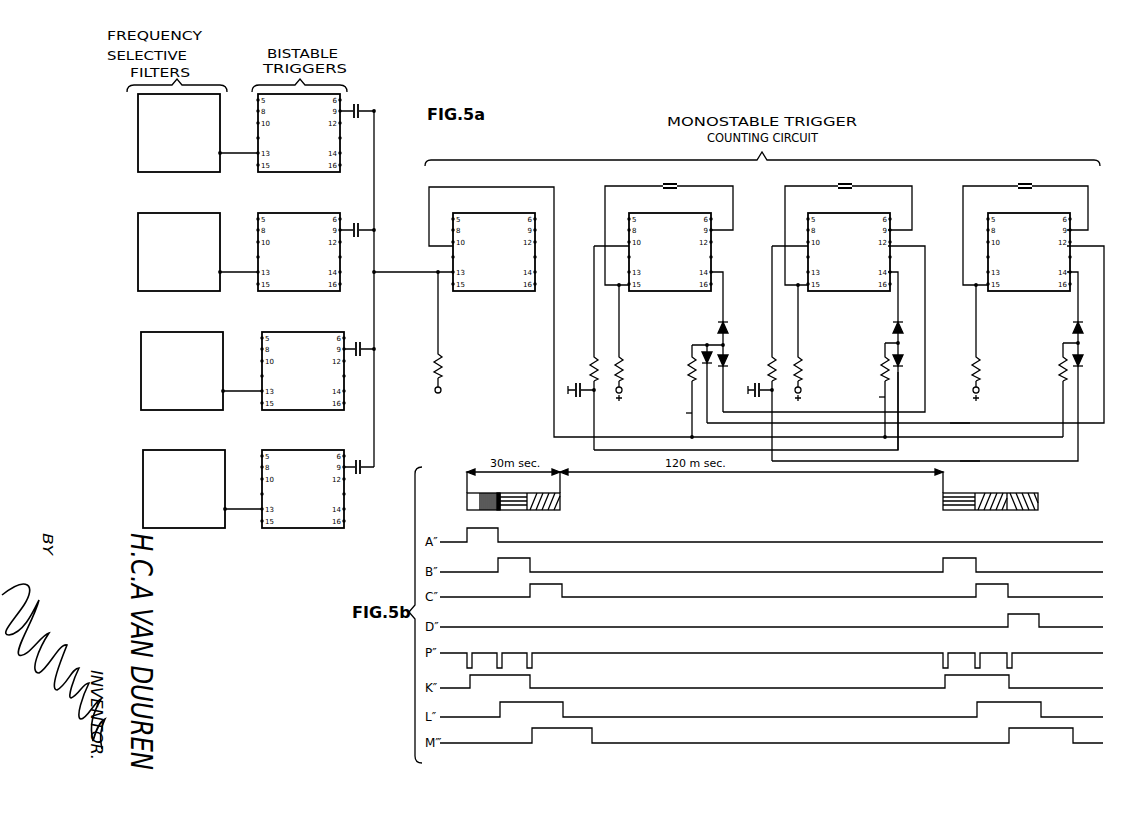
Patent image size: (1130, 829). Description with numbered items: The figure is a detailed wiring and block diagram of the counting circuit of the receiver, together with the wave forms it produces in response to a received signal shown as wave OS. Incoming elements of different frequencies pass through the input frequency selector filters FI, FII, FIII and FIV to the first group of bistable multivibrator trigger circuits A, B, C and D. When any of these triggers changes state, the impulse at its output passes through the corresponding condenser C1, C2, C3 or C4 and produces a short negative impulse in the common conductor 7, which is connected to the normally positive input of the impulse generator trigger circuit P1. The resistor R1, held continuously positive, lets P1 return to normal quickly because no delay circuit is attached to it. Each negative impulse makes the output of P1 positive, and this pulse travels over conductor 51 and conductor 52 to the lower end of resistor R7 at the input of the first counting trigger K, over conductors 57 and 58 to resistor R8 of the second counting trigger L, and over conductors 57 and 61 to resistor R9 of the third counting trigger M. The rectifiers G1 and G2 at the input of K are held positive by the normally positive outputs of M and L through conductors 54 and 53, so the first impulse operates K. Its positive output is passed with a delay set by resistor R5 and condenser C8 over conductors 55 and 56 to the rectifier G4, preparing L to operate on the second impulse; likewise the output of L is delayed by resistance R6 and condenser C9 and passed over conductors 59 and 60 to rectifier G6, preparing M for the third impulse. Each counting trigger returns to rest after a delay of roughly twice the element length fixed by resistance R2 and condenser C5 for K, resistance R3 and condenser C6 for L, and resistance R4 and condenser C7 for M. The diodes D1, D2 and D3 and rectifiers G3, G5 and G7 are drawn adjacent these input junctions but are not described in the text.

In FIG. 5a, the conductor 7 is at (375, 183).
In FIG. 5a, the conductor 51 is at (554, 293).
In FIG. 5a, the conductor 52 is at (682, 413).
In FIG. 5a, the conductor 53 is at (848, 412).
In FIG. 5a, the conductor 54 is at (963, 423).
In FIG. 5a, the conductor 55 is at (597, 272).
In FIG. 5a, the conductor 56 is at (618, 448).
In FIG. 5a, the conductor 57 is at (829, 437).
In FIG. 5a, the conductor 58 is at (875, 396).
In FIG. 5a, the conductor 59 is at (776, 298).
In FIG. 5a, the conductor 60 is at (978, 459).
In FIG. 5a, the conductor 61 is at (1009, 440).
In FIG. 5a, the input frequency selector filter FI is at (179, 133).
In FIG. 5a, the input frequency selector filter FII is at (179, 252).
In FIG. 5a, the input frequency selector filter FIII is at (182, 371).
In FIG. 5a, the input frequency selector filter FIV is at (184, 489).
In FIG. 5a, the bistable multivibrator trigger circuit A is at (298, 133).
In FIG. 5a, the bistable multivibrator trigger circuit B is at (298, 252).
In FIG. 5a, the bistable multivibrator trigger circuit C is at (302, 371).
In FIG. 5a, the bistable multivibrator trigger circuit D is at (302, 489).
In FIG. 5a, the impulse generator trigger circuit P1 is at (493, 252).
In FIG. 5a, the first counting trigger circuit K is at (669, 252).
In FIG. 5a, the second counting trigger circuit L is at (848, 252).
In FIG. 5a, the third counting trigger circuit M is at (1028, 252).
In FIG. 5a, the resistor R1 is at (446, 331).
In FIG. 5a, the resistance R2 is at (627, 343).
In FIG. 5a, the resistance R3 is at (806, 343).
In FIG. 5a, the resistance R4 is at (984, 343).
In FIG. 5a, the resistor R5 is at (588, 402).
In FIG. 5a, the resistance R6 is at (765, 408).
In FIG. 5a, the resistor R7 is at (683, 391).
In FIG. 5a, the resistor R8 is at (877, 390).
In FIG. 5a, the resistor R9 is at (1055, 390).
In FIG. 5a, the condenser C1 is at (357, 107).
In FIG. 5a, the condenser C2 is at (357, 226).
In FIG. 5a, the condenser C3 is at (359, 345).
In FIG. 5a, the condenser C4 is at (359, 463).
In FIG. 5a, the condenser C5 is at (669, 229).
In FIG. 5a, the condenser C6 is at (848, 229).
In FIG. 5a, the condenser C7 is at (1025, 229).
In FIG. 5a, the condenser C8 is at (581, 395).
In FIG. 5a, the condenser C9 is at (760, 395).
In FIG. 5a, the diode D1 is at (695, 330).
In FIG. 5a, the diode D2 is at (885, 330).
In FIG. 5a, the diode D3 is at (1062, 330).
In FIG. 5a, the diode or rectifier G1 is at (730, 378).
In FIG. 5a, the diode or rectifier G2 is at (709, 384).
In FIG. 5a, the rectifier G3 is at (730, 325).
In FIG. 5a, the diode or rectifier G4 is at (905, 396).
In FIG. 5a, the rectifier G5 is at (905, 325).
In FIG. 5a, the rectifier G6 is at (1085, 358).
In FIG. 5a, the rectifier G7 is at (1085, 325).
In FIG. 5b, the wave OS is at (742, 502).